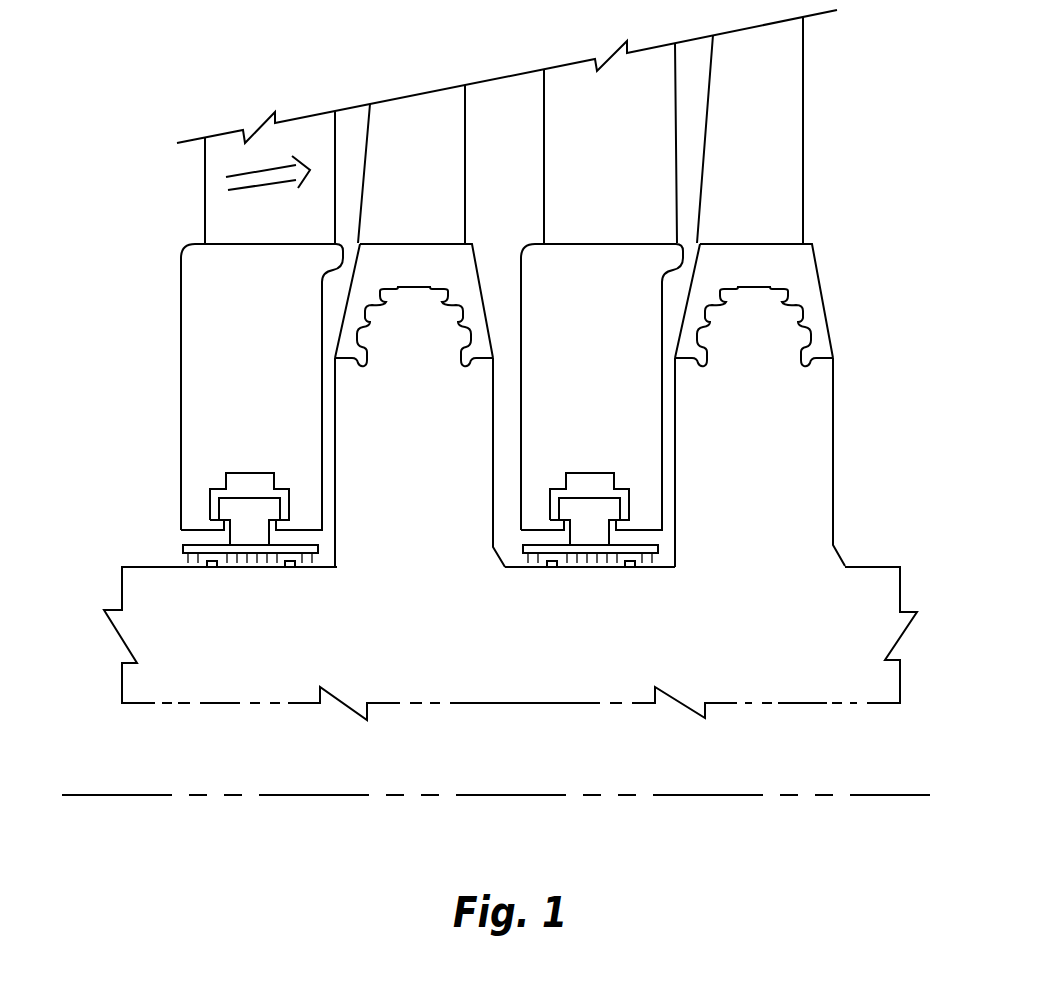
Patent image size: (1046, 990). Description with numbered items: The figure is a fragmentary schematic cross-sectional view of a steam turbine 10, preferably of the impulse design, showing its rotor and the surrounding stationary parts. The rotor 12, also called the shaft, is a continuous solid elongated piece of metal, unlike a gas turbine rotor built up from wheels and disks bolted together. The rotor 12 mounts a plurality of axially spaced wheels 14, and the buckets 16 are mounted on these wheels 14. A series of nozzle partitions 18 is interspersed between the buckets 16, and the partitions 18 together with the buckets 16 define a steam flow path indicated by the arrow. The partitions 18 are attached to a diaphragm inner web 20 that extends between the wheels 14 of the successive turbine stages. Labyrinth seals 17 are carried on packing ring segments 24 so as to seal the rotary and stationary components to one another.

The steam turbine 10 is at (148, 480).
The rotor 12 is at (142, 567).
The wheel 14 is at (462, 433).
The bucket 16 is at (442, 171).
The labyrinth seal 17 is at (248, 564).
The nozzle partition 18 is at (209, 209).
The diaphragm inner web 20 is at (183, 357).
The packing ring segment 24 is at (270, 510).